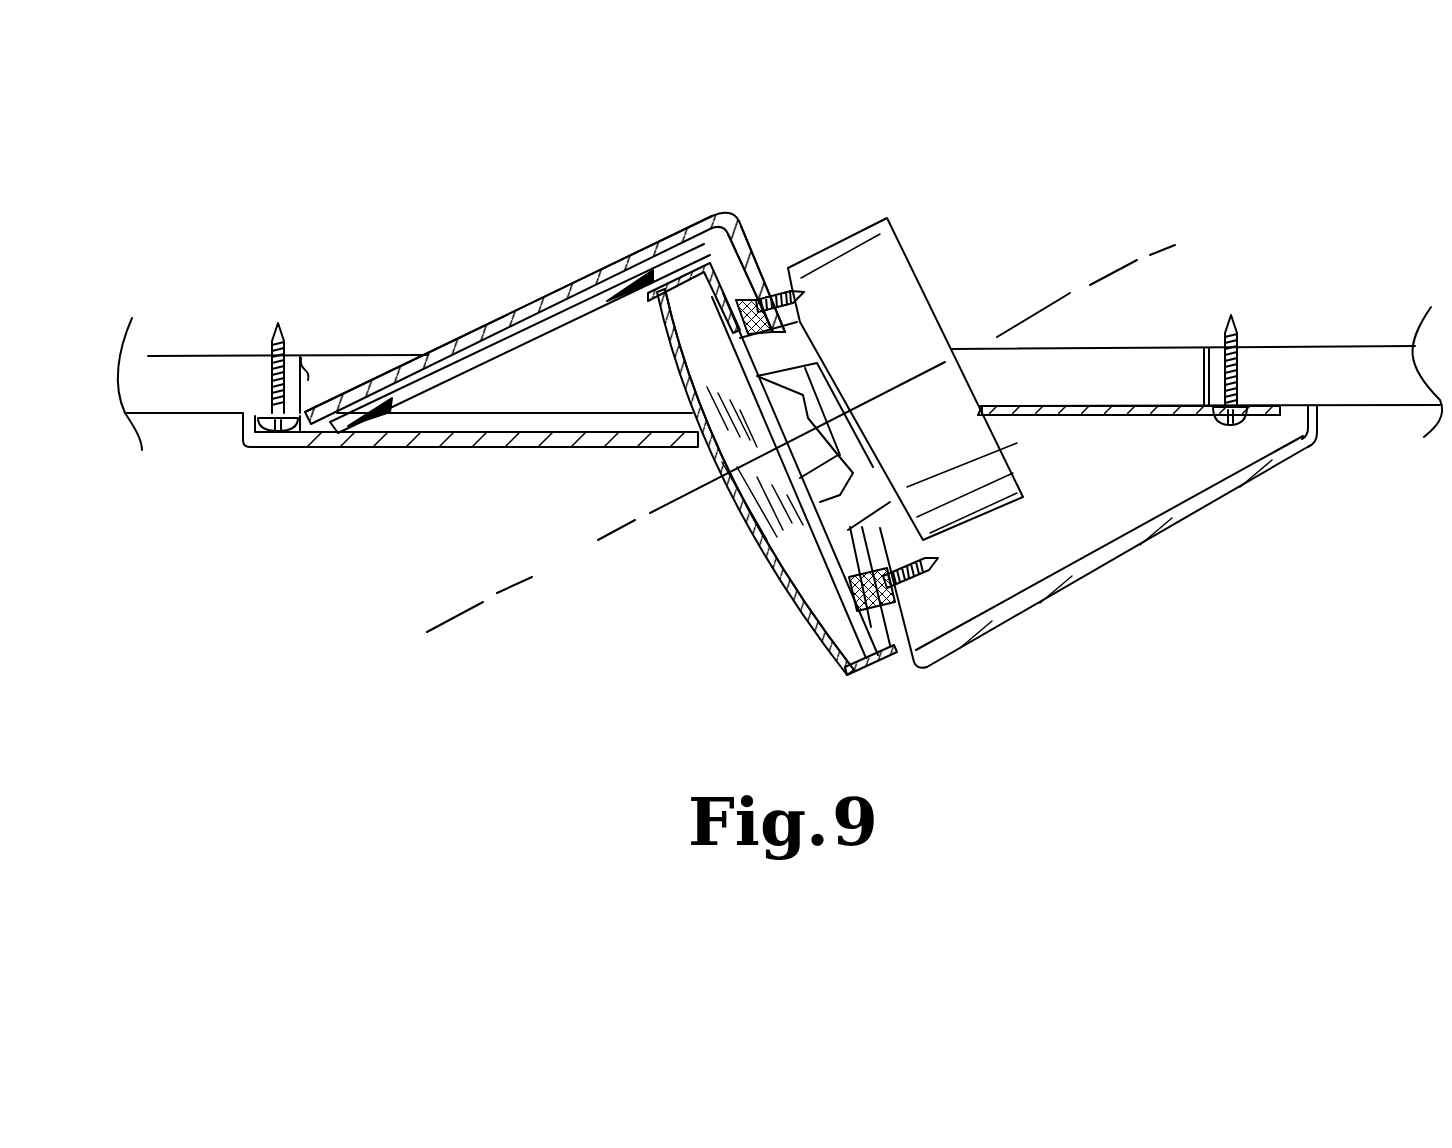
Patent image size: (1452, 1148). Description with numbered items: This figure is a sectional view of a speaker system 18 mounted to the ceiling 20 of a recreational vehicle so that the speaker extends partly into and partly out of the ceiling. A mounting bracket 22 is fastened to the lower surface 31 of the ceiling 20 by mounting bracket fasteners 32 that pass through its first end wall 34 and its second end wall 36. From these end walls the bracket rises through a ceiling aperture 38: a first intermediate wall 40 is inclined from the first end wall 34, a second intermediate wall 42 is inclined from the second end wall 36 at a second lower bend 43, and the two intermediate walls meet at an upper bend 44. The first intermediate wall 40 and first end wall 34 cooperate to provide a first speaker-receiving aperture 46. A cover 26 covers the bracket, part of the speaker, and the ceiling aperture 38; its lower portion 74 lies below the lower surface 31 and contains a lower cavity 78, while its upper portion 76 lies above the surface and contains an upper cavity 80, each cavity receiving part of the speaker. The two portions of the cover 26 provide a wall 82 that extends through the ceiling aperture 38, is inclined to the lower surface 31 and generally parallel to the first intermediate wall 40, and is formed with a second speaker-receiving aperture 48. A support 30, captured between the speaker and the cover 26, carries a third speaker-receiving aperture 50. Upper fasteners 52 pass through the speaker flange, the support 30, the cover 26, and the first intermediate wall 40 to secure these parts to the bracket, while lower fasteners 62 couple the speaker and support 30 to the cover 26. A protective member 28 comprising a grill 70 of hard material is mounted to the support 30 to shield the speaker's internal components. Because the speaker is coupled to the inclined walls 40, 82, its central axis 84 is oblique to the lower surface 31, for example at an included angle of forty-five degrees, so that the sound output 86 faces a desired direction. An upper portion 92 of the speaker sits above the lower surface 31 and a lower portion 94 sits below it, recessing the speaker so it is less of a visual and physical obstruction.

The speaker system 18 is at (470, 282).
The ceiling 20 is at (1330, 364).
The mounting bracket 22 is at (552, 284).
The cover 26 is at (1119, 533).
The protective member 28 is at (771, 501).
The support 30 is at (700, 290).
The lower surface 31 is at (1355, 412).
The mounting bracket fasteners 32 is at (271, 341).
The first end wall 34 is at (1110, 414).
The second end wall 36 is at (270, 434).
The ceiling aperture 38 is at (308, 375).
The first intermediate wall 40 is at (742, 240).
The second intermediate wall 42 is at (565, 287).
The second lower bend 43 is at (318, 446).
The upper bend 44 is at (722, 213).
The first speaker-receiving aperture 46 is at (1040, 408).
The second speaker-receiving aperture 48 is at (893, 585).
The third speaker-receiving aperture 50 is at (733, 316).
The upper fasteners 52 is at (772, 297).
The lower fasteners 62 is at (937, 559).
The grill 70 is at (886, 658).
The lower portion 74 is at (1036, 606).
The upper portion 76 is at (696, 224).
The lower cavity 78 is at (1098, 527).
The upper cavity 80 is at (480, 449).
The wall 82 is at (892, 606).
The central axis 84 is at (552, 572).
The sound output 86 is at (722, 372).
The upper portion 92 is at (892, 278).
The lower portion 94 is at (801, 607).